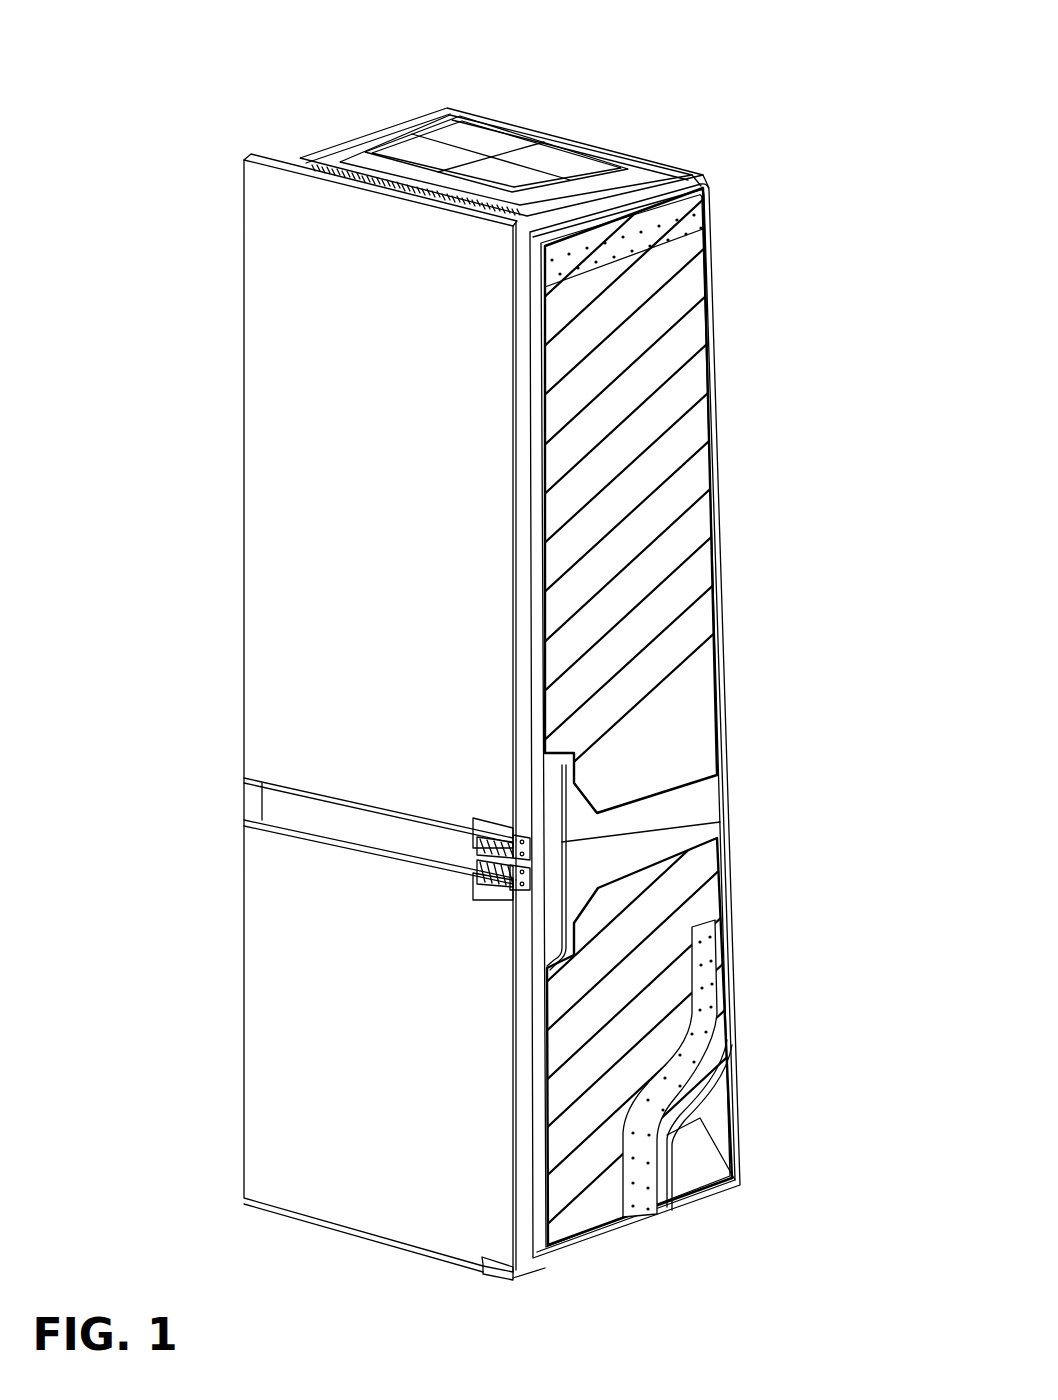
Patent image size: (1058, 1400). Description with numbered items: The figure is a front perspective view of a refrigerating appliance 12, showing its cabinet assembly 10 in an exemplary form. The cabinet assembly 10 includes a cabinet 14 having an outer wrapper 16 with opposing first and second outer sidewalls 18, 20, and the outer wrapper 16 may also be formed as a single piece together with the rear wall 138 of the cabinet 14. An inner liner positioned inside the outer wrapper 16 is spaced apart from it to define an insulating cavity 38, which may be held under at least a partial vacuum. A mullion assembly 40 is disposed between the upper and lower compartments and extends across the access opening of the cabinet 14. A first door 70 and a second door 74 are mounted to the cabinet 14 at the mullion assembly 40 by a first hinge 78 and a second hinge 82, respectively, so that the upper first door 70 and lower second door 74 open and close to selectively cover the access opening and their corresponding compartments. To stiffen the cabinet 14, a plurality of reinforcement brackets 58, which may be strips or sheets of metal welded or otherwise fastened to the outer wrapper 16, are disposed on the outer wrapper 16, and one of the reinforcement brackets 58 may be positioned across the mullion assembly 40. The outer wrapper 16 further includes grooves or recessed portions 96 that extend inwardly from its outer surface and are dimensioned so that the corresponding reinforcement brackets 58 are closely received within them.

The cabinet assembly 10 is at (814, 153).
The refrigerating appliance 12 is at (818, 48).
The cabinet 14 is at (772, 504).
The outer wrapper 16 is at (692, 285).
The first outer sidewall 18 is at (363, 133).
The second outer sidewall 20 is at (685, 246).
The insulating cavity 38 is at (681, 592).
The mullion assembly 40 is at (288, 806).
The reinforcement brackets 58 is at (567, 122).
The first door 70 is at (316, 655).
The second door 74 is at (355, 1040).
The first hinge 78 is at (462, 828).
The second hinge 82 is at (468, 882).
The recessed portions 96 is at (647, 803).
The rear wall 138 is at (603, 141).